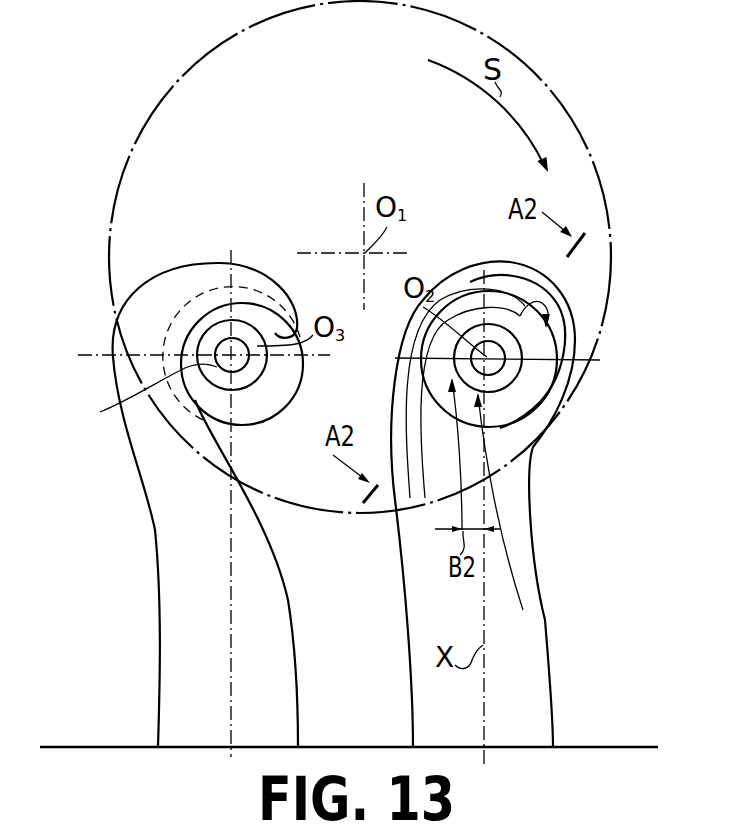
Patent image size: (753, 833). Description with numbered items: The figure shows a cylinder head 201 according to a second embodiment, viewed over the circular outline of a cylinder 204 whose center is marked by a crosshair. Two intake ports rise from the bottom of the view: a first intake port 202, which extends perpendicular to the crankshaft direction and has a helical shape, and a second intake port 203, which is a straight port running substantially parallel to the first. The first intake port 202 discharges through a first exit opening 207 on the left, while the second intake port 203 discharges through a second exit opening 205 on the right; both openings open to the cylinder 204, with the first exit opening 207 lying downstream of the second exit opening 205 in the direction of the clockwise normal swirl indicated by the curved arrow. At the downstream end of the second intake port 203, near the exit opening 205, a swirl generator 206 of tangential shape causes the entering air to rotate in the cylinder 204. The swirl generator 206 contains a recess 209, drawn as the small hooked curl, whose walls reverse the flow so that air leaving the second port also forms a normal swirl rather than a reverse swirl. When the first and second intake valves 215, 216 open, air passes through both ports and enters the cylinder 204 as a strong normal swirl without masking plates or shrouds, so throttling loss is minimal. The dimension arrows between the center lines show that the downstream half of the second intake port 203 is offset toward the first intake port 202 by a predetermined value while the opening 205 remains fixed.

The cylinder head 201 is at (134, 710).
The first intake port 202 is at (175, 605).
The second intake port 203 is at (528, 672).
The cylinder 204 is at (577, 170).
The exit opening of the second intake port 205 is at (512, 368).
The swirl generator 206 is at (525, 478).
The exit opening of the first intake port 207 is at (215, 350).
The recess 209 is at (546, 325).
The first intake valve 215 is at (136, 399).
The second intake valve 216 is at (530, 365).